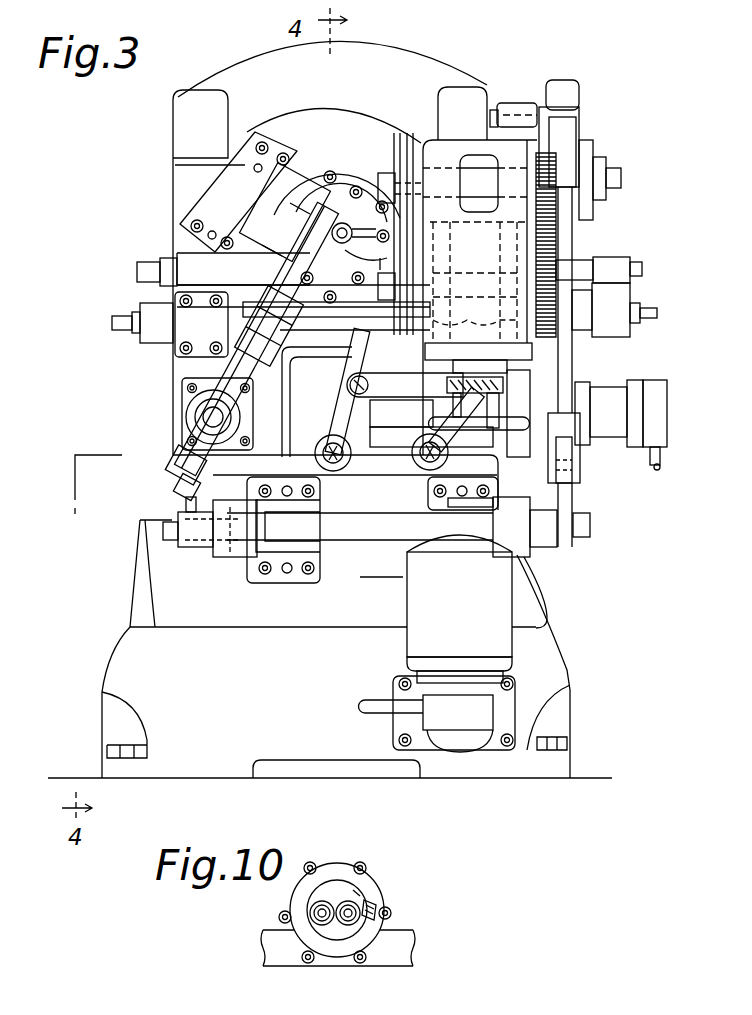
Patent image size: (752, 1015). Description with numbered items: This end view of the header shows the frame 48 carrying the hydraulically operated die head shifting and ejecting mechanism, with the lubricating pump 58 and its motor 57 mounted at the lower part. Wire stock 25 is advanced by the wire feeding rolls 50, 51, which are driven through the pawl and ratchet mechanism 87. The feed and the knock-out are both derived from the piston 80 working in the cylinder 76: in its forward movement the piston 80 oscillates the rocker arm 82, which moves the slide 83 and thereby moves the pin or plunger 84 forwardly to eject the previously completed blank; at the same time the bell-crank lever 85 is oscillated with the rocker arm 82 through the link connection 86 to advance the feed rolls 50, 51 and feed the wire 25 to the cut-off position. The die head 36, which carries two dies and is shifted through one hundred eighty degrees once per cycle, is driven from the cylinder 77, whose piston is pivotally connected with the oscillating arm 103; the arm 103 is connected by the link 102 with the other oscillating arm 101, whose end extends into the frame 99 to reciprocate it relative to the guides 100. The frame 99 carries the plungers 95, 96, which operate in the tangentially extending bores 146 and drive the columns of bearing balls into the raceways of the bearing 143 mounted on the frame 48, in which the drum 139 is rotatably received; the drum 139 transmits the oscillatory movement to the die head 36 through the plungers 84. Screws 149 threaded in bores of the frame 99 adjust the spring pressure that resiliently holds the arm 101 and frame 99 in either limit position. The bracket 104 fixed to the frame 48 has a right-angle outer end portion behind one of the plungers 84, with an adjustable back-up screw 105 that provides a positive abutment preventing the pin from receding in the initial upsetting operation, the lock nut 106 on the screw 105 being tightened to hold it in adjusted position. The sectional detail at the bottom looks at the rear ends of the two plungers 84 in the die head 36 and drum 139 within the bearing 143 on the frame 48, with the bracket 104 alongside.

In FIG. 3, the frame 48 is at (428, 72).
In FIG. 10, the frame 48 is at (408, 948).
In FIG. 3, the pawl and ratchet mechanism 87 is at (573, 92).
In FIG. 3, the wire feeding roll 50 is at (393, 150).
In FIG. 3, the die head 36 is at (328, 212).
In FIG. 10, the die head 36 is at (333, 888).
In FIG. 3, the lock nut 106 is at (343, 225).
In FIG. 3, the bracket 104 is at (381, 200).
In FIG. 10, the bracket 104 is at (370, 902).
In FIG. 3, the tangentially extending bores 146 is at (238, 192).
In FIG. 3, the slide 83 is at (285, 212).
In FIG. 3, the rocker arm 82 is at (255, 360).
In FIG. 3, the link connection 86 is at (176, 474).
In FIG. 3, the plunger 95 is at (178, 274).
In FIG. 3, the back-up screw 105 is at (303, 290).
In FIG. 3, the wire feeding roll 51 is at (397, 318).
In FIG. 3, the guides 100 is at (188, 322).
In FIG. 3, the screw 149 is at (114, 323).
In FIG. 3, the cylinder 76 is at (195, 400).
In FIG. 3, the piston 80 is at (208, 416).
In FIG. 3, the wire stock 25 is at (402, 234).
In FIG. 3, the drum 139 is at (380, 263).
In FIG. 10, the drum 139 is at (353, 892).
In FIG. 3, the plunger 96 is at (583, 264).
In FIG. 3, the frame 99 is at (622, 300).
In FIG. 3, the cylinder 77 is at (606, 397).
In FIG. 3, the bell-crank lever 85 is at (572, 495).
In FIG. 3, the oscillating arm 101 is at (367, 348).
In FIG. 3, the link 102 is at (412, 385).
In FIG. 3, the oscillating arm 103 is at (432, 413).
In FIG. 3, the motor 57 is at (500, 592).
In FIG. 3, the lubricating pump 58 is at (485, 705).
In FIG. 10, the bearing 143 is at (283, 917).
In FIG. 10, the pin or plunger 84 is at (348, 913).